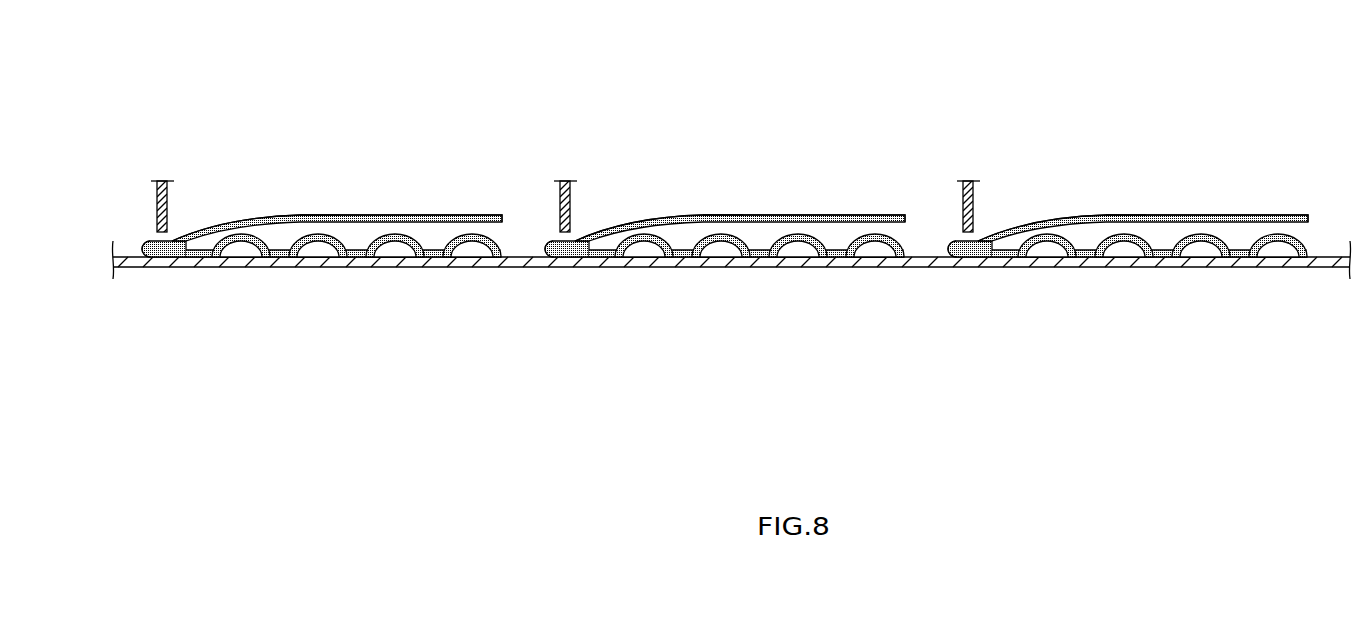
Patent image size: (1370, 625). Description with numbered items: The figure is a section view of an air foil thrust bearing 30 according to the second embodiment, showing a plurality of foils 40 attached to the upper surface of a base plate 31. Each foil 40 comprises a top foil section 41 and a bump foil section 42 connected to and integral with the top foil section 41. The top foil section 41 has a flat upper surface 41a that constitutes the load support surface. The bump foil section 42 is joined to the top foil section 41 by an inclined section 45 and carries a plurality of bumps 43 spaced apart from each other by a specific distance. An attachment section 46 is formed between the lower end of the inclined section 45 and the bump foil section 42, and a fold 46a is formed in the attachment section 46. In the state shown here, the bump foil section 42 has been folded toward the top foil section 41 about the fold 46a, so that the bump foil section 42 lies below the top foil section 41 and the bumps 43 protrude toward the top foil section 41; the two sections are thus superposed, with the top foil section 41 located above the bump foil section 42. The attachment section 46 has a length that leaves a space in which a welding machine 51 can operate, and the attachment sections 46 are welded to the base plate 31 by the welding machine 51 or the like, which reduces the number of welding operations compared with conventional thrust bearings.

The air foil thrust bearing 30 is at (155, 40).
The base plate 31 is at (273, 263).
The foil 40 is at (273, 198).
The top foil section 41 is at (450, 215).
The flat upper surface 41a is at (317, 215).
The bump foil section 42 is at (393, 250).
The bumps 43 is at (342, 242).
The inclined section 45 is at (224, 226).
The attachment section 46 is at (165, 257).
The fold 46a is at (131, 257).
The welding machine 51 is at (156, 208).